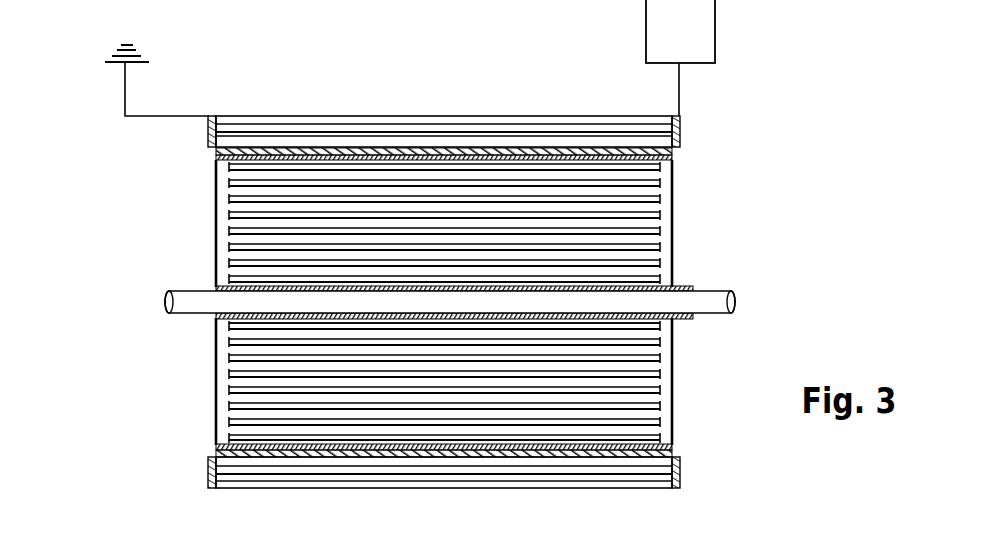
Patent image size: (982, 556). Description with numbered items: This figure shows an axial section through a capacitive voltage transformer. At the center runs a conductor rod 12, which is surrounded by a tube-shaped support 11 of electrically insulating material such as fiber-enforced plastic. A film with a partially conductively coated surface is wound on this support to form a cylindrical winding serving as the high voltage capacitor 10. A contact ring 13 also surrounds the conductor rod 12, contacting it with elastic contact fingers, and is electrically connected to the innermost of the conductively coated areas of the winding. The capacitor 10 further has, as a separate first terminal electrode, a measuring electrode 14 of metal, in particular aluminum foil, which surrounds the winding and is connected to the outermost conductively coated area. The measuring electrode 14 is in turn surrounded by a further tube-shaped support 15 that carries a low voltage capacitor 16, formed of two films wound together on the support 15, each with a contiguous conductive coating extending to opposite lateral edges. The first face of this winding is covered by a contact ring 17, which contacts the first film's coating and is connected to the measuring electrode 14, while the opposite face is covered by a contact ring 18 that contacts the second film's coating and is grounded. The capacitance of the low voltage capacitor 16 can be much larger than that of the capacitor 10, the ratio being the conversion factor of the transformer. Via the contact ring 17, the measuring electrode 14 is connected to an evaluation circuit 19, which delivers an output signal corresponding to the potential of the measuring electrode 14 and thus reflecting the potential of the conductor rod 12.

The capacitor 10 is at (372, 324).
The tube-shaped support 11 is at (362, 363).
The conductor rod 12 is at (399, 319).
The contact ring 13 is at (520, 285).
The measuring electrode 14 is at (520, 183).
The further tube-shaped support 15 is at (368, 214).
The low voltage capacitor 16 is at (309, 112).
The contact ring 17 is at (680, 134).
The contact ring 18 is at (140, 162).
The evaluation circuit 19 is at (660, 41).